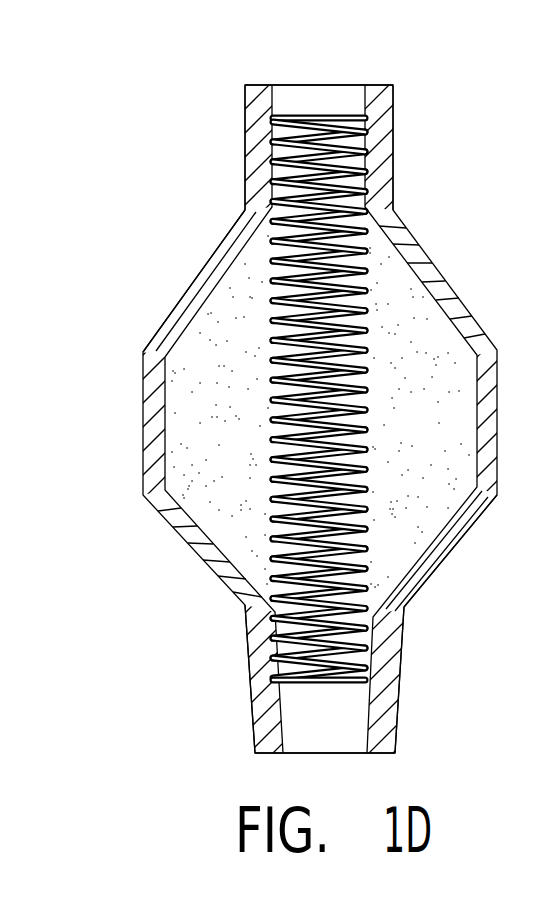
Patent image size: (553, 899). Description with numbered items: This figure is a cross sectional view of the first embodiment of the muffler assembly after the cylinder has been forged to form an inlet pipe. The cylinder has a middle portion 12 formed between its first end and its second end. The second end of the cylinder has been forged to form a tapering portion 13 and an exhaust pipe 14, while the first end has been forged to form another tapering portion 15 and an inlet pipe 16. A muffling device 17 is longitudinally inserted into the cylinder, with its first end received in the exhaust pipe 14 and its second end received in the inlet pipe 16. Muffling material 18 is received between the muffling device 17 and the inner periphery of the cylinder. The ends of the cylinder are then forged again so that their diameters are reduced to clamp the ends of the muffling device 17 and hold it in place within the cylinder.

The middle portion 12 is at (145, 410).
The tapering portion 13 is at (435, 563).
The exhaust pipe 14 is at (250, 712).
The tapering portion 15 is at (202, 266).
The inlet pipe 16 is at (245, 110).
The muffling device 17 is at (323, 120).
The muffling material 18 is at (420, 370).